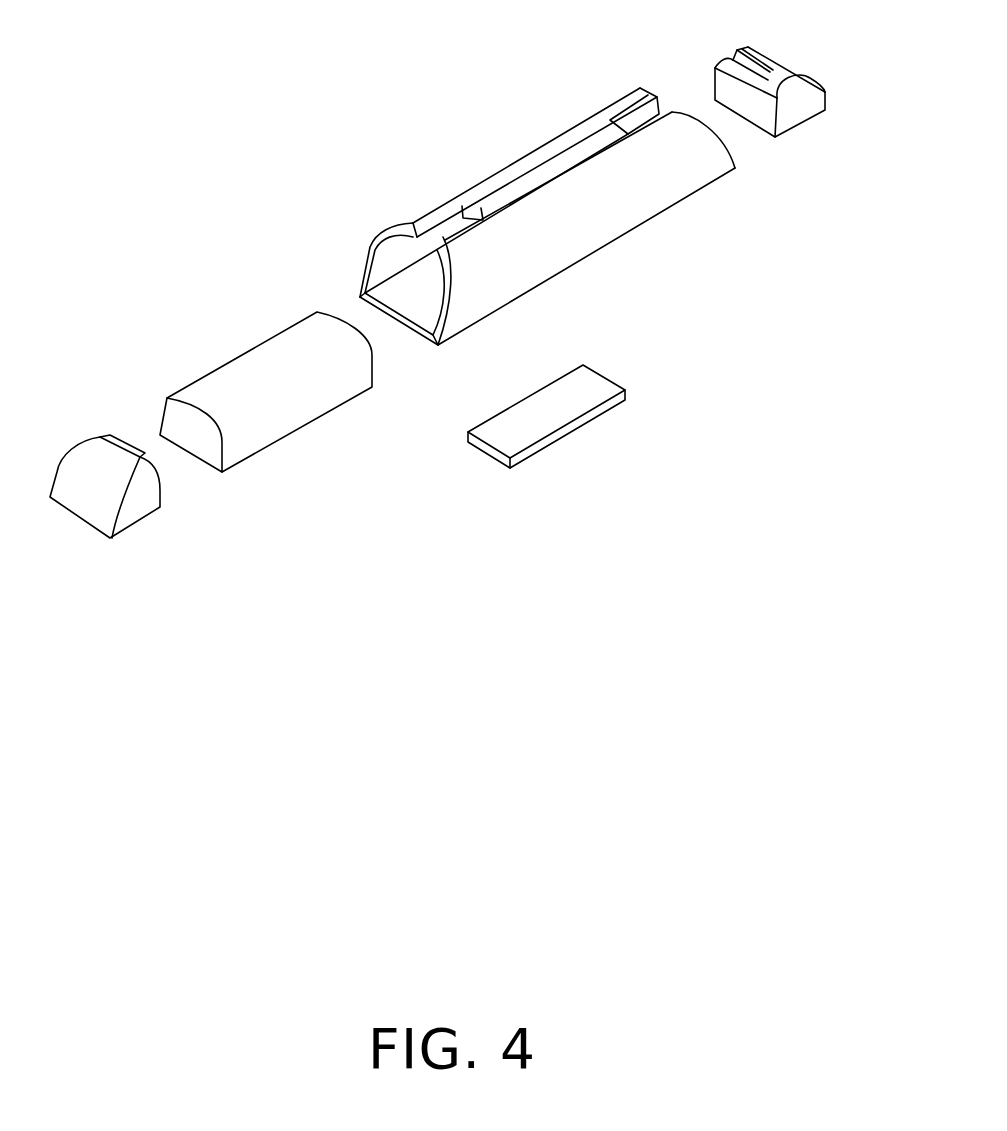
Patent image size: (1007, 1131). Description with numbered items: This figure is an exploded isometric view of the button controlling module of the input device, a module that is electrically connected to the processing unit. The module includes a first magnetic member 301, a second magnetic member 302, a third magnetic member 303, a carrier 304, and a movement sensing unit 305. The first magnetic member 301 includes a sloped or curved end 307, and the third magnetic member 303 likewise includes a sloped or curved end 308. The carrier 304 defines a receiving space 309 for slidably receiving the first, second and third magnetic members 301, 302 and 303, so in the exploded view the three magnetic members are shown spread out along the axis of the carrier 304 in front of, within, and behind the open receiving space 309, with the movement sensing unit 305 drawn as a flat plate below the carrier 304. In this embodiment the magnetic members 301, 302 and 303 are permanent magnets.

The first magnetic member 301 is at (142, 492).
The second magnetic member 302 is at (257, 377).
The third magnetic member 303 is at (795, 103).
The carrier 304 is at (617, 202).
The movement sensing unit 305 is at (567, 403).
The sloped or curved end 307 is at (100, 485).
The sloped or curved end 308 is at (765, 65).
The receiving space 309 is at (397, 262).